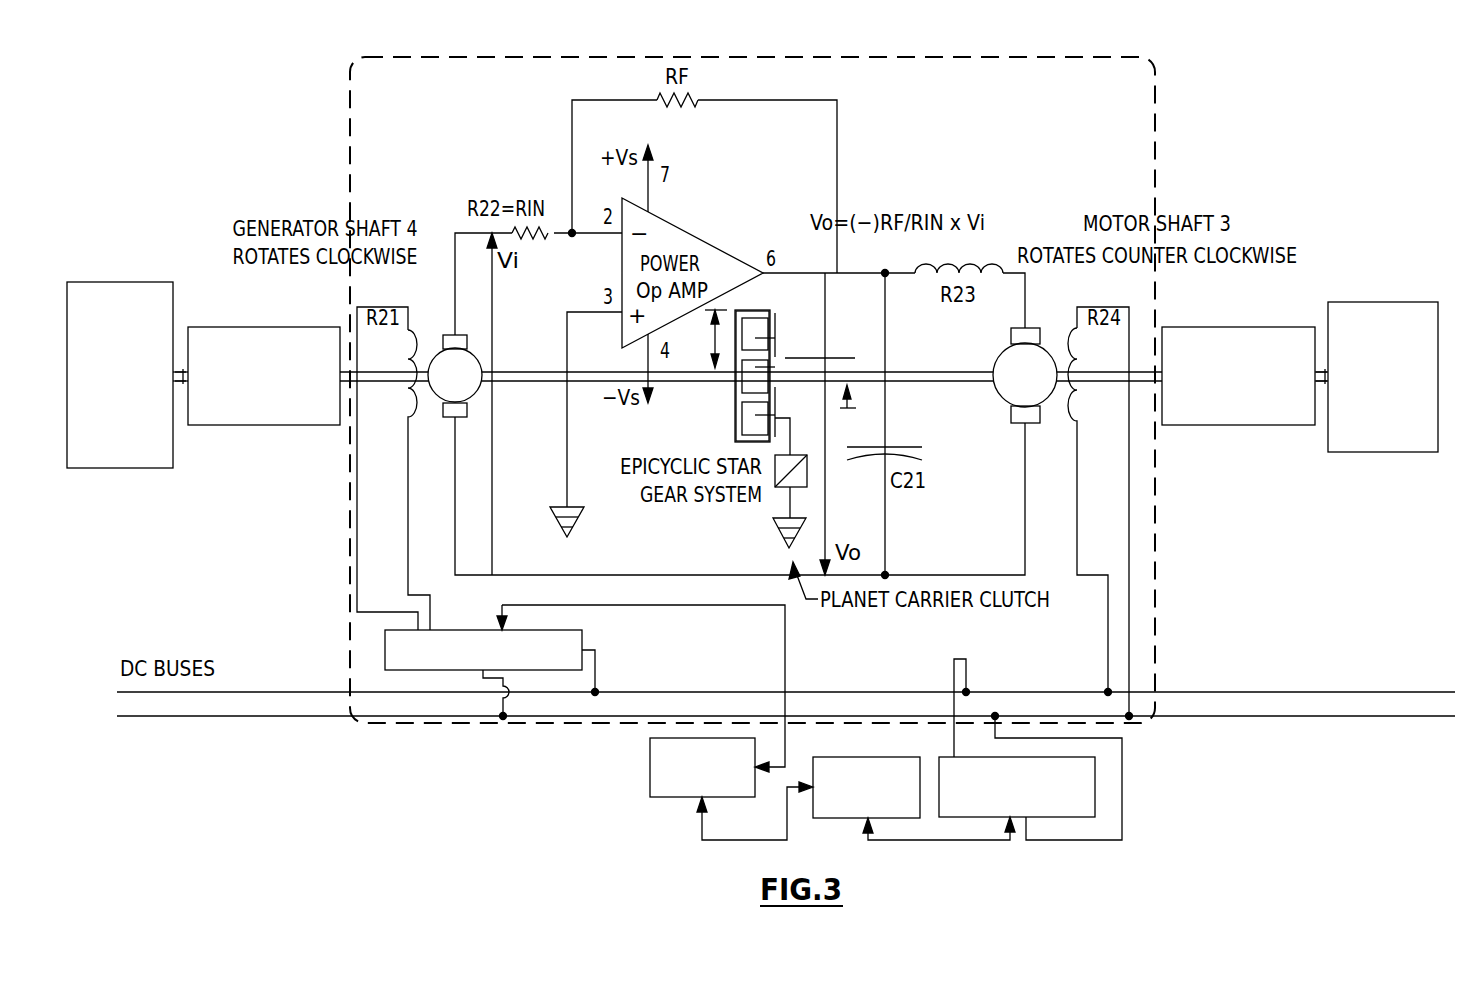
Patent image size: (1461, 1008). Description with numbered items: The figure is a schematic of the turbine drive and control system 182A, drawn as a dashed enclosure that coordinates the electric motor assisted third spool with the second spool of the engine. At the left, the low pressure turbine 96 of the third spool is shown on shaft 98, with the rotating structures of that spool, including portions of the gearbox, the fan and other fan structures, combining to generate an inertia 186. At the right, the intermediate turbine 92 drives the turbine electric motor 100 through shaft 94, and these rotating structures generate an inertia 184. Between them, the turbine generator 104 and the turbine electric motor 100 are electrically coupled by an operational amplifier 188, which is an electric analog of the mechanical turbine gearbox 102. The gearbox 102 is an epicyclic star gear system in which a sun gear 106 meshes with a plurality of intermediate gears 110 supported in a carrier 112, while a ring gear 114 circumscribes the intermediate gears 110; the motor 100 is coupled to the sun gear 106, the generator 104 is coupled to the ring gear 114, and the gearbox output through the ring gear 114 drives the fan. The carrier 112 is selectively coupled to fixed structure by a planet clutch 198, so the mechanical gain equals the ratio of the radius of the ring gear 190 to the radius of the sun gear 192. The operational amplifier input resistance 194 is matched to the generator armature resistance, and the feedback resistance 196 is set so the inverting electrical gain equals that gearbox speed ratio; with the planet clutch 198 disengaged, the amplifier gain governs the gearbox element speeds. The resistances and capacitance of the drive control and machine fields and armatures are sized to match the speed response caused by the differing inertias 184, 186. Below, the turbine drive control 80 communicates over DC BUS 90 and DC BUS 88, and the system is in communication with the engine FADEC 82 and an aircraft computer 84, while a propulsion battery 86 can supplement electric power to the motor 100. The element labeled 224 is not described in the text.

The turbine drive and control system 182A is at (1186, 68).
The feedback resistance RF 196 is at (690, 62).
The operational amplifier input resistance RIN 194 is at (504, 210).
The operational amplifier 188 is at (688, 232).
The turbine gearbox 102 is at (777, 300).
The carrier 112 is at (775, 338).
The sun gear 106 is at (775, 367).
The intermediate gears 110 is at (775, 405).
The ring gear 114 is at (735, 418).
The radius of the ring gear 190 is at (710, 345).
The radius of the sun gear 192 is at (856, 408).
The planet clutch 198 is at (807, 473).
The clutch ground 224 is at (783, 555).
The turbine generator 104 is at (478, 393).
The turbine electric motor 100 is at (1005, 400).
The shaft 98 is at (183, 384).
The low pressure turbine 96 is at (232, 425).
The inertia 186 is at (132, 468).
The intermediate turbine 92 is at (1215, 327).
The shaft 94 is at (1325, 384).
The inertia 184 is at (1342, 452).
The DC BUS 90 is at (294, 684).
The DC BUS 88 is at (272, 708).
The turbine drive control T 80 is at (583, 640).
The engine FADEC 82 is at (650, 760).
The aircraft computer 84 is at (863, 757).
The propulsion battery 86 is at (1096, 777).